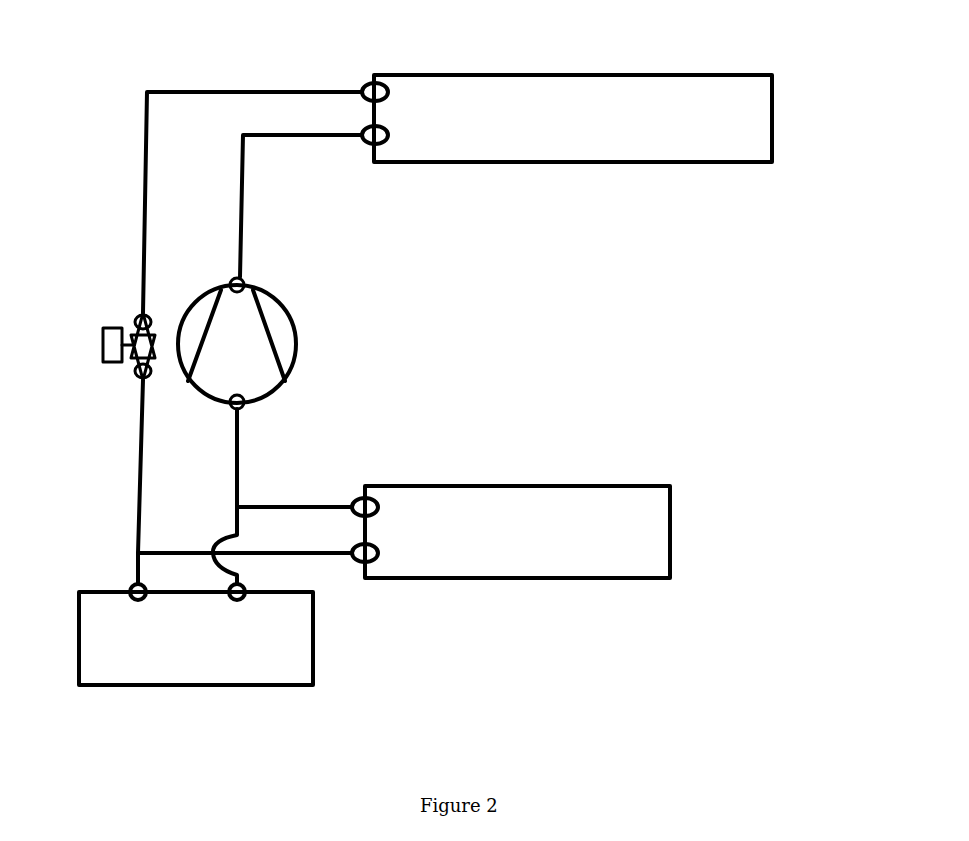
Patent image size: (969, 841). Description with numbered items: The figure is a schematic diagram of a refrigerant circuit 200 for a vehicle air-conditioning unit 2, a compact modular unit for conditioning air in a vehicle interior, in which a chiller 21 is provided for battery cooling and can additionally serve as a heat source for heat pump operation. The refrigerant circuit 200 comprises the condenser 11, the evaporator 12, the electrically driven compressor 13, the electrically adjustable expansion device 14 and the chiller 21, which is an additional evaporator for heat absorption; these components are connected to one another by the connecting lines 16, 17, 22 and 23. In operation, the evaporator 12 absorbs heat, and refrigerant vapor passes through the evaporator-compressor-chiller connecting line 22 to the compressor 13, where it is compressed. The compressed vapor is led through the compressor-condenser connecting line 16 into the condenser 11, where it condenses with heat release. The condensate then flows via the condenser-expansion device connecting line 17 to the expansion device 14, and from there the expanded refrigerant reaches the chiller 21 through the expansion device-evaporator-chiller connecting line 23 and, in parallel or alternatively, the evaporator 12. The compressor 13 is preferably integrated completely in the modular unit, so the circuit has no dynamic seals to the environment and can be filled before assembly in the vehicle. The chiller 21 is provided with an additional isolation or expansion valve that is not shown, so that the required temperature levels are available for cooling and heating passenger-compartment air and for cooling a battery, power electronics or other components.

The vehicle air-conditioning unit 2 is at (814, 64).
The refrigerant circuit 200 is at (698, 363).
The condenser 11 is at (675, 163).
The evaporator 12 is at (635, 583).
The electrically driven compressor 13 is at (297, 335).
The electrically adjustable expansion device 14 is at (128, 332).
The compressor-condenser connecting line 16 is at (245, 194).
The condenser-expansion device connecting line 17 is at (236, 92).
The chiller 21 is at (313, 655).
The evaporator-compressor-chiller connecting line 22 is at (278, 504).
The expansion device-evaporator-chiller connecting line 23 is at (134, 478).